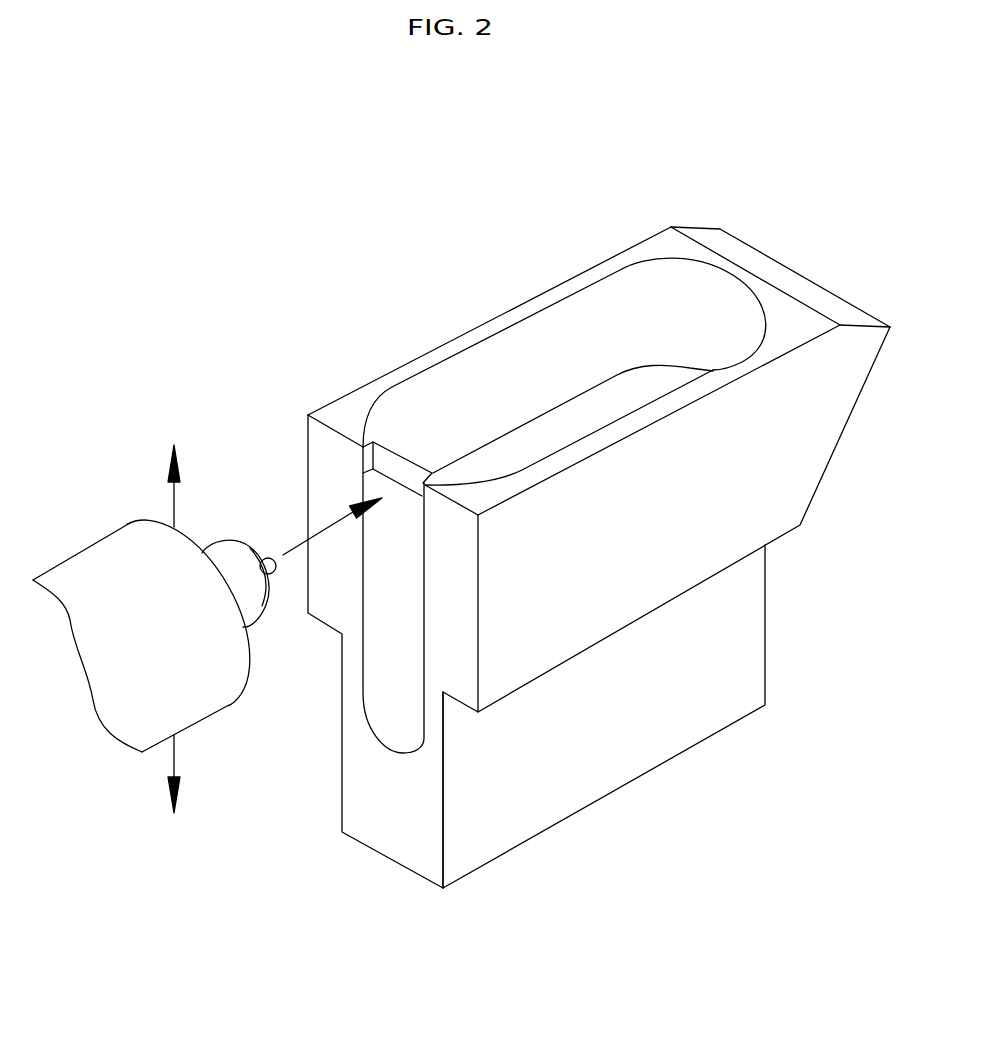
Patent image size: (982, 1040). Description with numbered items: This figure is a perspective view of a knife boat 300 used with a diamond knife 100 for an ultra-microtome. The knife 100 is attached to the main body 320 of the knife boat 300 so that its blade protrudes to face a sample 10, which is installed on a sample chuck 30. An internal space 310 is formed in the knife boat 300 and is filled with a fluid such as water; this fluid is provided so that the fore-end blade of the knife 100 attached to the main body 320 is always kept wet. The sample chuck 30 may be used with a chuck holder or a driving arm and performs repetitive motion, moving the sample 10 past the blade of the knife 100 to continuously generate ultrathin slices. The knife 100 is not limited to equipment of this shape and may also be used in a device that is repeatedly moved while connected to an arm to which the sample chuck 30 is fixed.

The knife boat 300 is at (780, 221).
The internal space 310 is at (612, 318).
The main body 320 is at (592, 573).
The knife 100 is at (393, 477).
The sample 10 is at (253, 542).
The sample chuck 30 is at (208, 687).